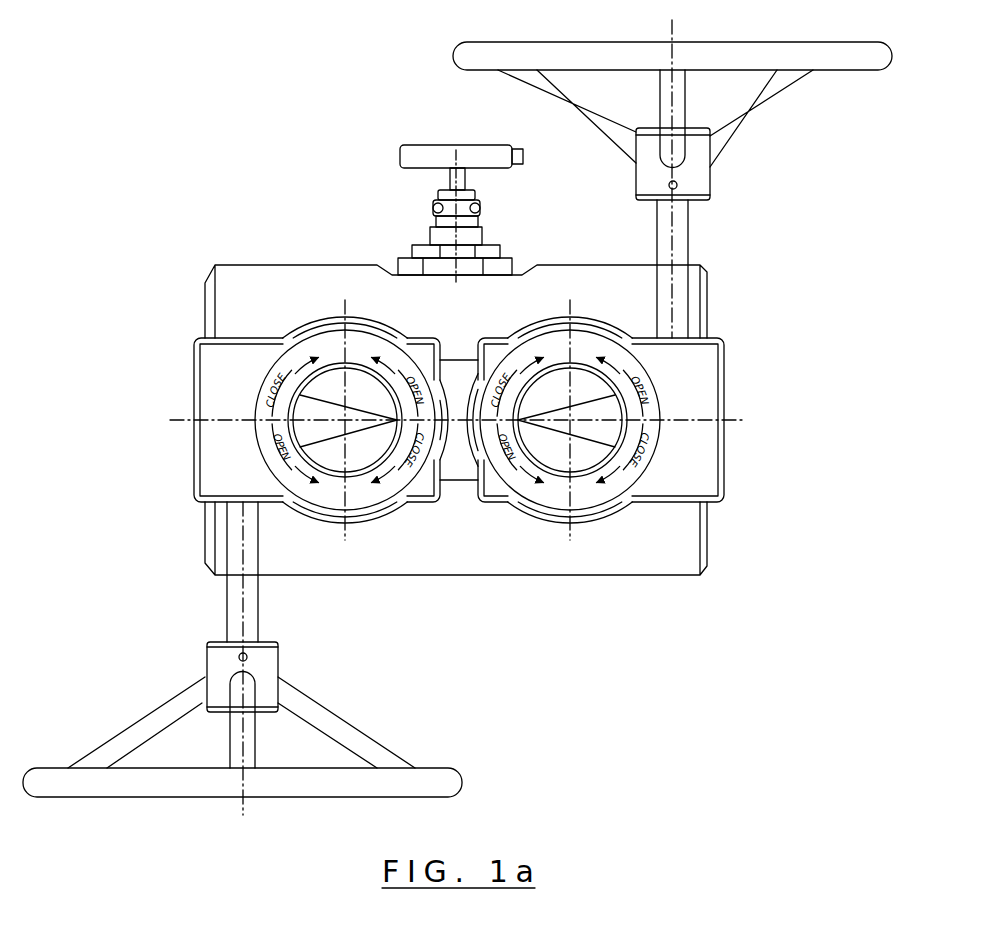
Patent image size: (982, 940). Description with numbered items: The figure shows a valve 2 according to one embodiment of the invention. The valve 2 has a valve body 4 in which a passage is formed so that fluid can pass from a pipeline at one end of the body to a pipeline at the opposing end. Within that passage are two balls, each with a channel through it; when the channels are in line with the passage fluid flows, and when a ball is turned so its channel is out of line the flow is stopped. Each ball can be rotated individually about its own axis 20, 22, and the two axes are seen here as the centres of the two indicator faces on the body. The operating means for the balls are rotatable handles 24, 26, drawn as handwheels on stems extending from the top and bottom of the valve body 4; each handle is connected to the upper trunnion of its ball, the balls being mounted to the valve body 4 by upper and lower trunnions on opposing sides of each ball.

The valve 2 is at (186, 257).
The valve body 4 is at (697, 287).
The axis 20 is at (357, 432).
The axis 22 is at (588, 432).
The rotatable handle 24 is at (155, 722).
The rotatable handle 26 is at (822, 77).